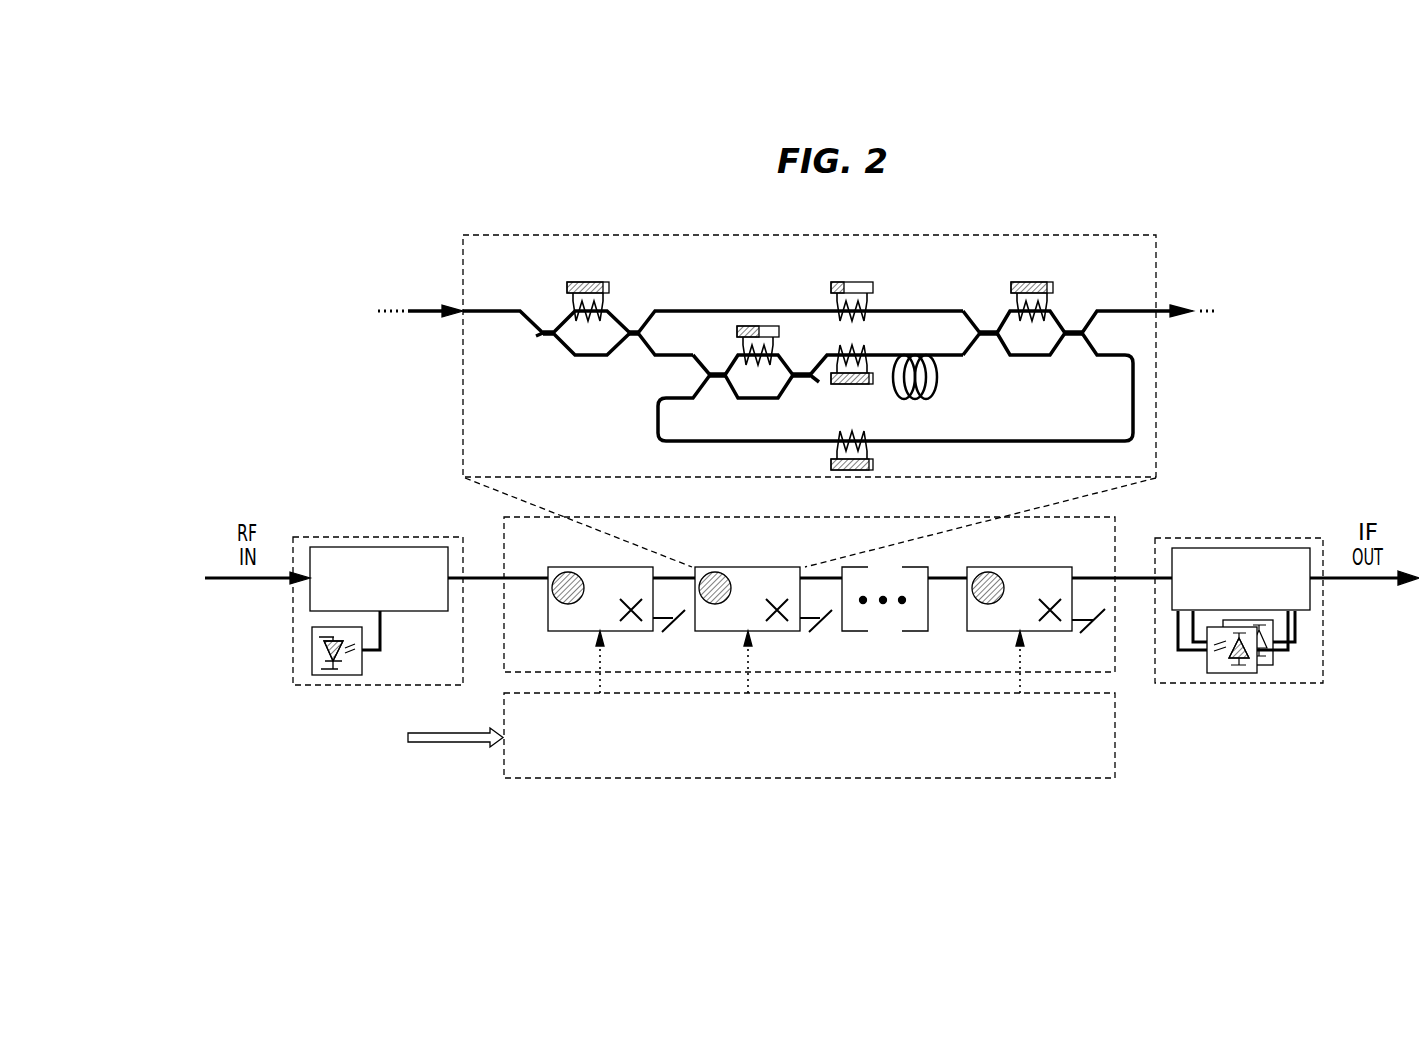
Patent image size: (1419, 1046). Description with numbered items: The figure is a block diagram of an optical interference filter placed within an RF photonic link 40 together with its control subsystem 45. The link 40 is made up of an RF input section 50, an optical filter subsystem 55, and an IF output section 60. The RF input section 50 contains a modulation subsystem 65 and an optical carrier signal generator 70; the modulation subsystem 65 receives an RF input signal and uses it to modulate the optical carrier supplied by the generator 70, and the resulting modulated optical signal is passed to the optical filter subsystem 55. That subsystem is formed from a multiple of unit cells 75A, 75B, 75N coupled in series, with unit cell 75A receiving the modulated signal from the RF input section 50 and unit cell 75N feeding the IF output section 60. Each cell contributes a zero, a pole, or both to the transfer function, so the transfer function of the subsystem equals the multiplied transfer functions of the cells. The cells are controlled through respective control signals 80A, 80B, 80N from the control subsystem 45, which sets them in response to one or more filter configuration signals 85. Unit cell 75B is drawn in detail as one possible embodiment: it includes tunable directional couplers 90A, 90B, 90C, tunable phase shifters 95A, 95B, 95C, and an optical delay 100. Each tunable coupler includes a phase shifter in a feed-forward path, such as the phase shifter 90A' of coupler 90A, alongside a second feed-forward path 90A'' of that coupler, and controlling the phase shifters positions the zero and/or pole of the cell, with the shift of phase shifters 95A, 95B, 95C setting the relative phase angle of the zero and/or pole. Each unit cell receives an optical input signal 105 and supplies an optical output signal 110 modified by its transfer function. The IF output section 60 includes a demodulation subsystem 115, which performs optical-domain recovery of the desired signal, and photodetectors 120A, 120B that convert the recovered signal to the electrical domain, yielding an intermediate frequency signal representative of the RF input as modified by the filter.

The RF photonic link 40 is at (203, 497).
The control subsystem 45 is at (1115, 767).
The RF input section 50 is at (293, 613).
The optical filter subsystem 55 is at (1115, 532).
The IF output section 60 is at (1325, 662).
The modulation subsystem 65 is at (333, 547).
The optical carrier signal generator 70 is at (312, 650).
The unit cell 75A is at (567, 567).
The unit cell 75B is at (773, 567).
The unit cell 75N is at (1037, 567).
The control signal 80A is at (598, 663).
The control signal 80B is at (746, 663).
The control signal 80N is at (1018, 663).
The filter configuration signal 85 is at (448, 742).
The tunable directional coupler 90A is at (713, 311).
The phase shifter 90A' is at (612, 281).
The second feed-forward path 90A'' is at (591, 370).
The tunable directional coupler 90B is at (742, 400).
The tunable directional coupler 90C is at (1028, 355).
The tunable phase shifter 95A is at (875, 302).
The tunable phase shifter 95B is at (872, 348).
The tunable phase shifter 95C is at (837, 437).
The optical delay 100 is at (937, 380).
The optical input signal 105 is at (425, 318).
The optical output signal 110 is at (1197, 317).
The demodulation subsystem 115 is at (1270, 548).
The photodetector 120A is at (1227, 673).
The photodetector 120B is at (1270, 665).